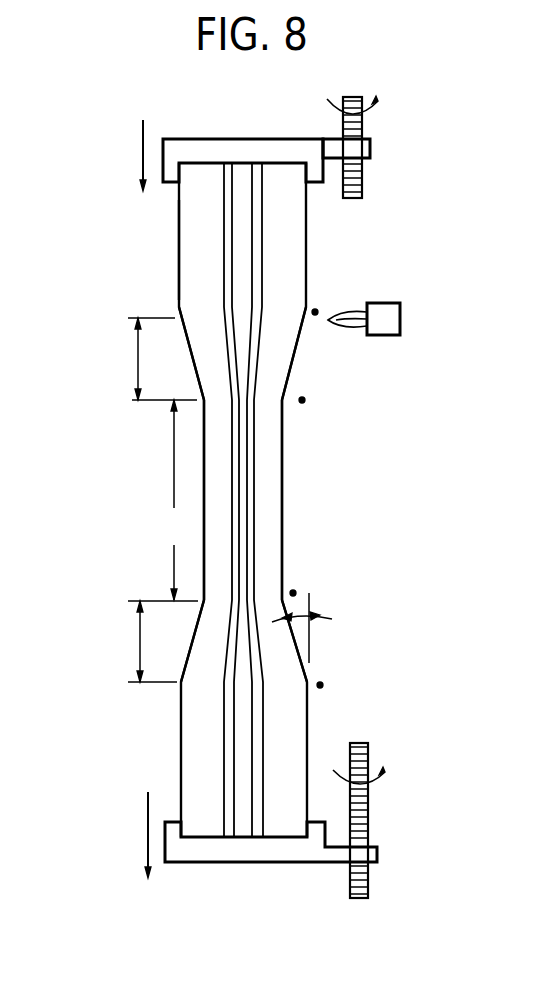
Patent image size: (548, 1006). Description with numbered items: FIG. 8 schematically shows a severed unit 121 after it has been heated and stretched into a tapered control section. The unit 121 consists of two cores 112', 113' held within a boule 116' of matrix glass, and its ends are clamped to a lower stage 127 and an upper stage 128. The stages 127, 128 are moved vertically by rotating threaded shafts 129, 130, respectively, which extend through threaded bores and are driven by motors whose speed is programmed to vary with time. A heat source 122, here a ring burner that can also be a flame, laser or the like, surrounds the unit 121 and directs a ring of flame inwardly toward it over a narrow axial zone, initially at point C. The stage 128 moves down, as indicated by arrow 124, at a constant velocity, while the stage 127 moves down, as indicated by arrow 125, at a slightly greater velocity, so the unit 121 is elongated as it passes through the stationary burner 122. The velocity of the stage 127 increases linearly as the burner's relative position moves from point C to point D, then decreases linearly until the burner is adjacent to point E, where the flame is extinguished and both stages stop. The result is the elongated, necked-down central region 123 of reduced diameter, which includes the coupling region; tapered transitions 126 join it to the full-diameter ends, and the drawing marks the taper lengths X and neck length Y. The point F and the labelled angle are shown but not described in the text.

The core 112' is at (179, 500).
The core 113' is at (307, 500).
The boule 116' is at (145, 250).
The unit 121 is at (177, 747).
The heat source 122 is at (402, 318).
The necked-down central region 123 is at (290, 477).
The arrow 124 is at (143, 148).
The arrow 125 is at (148, 832).
The tapered transition region 126 is at (296, 360).
The stage 127 is at (262, 853).
The stage 128 is at (243, 148).
The threaded shaft 129 is at (370, 809).
The threaded shaft 130 is at (365, 166).
The taper length X is at (163, 500).
The neck length Y is at (173, 500).
The point F is at (316, 311).
The point E is at (304, 401).
The point D is at (294, 592).
The point C is at (322, 685).